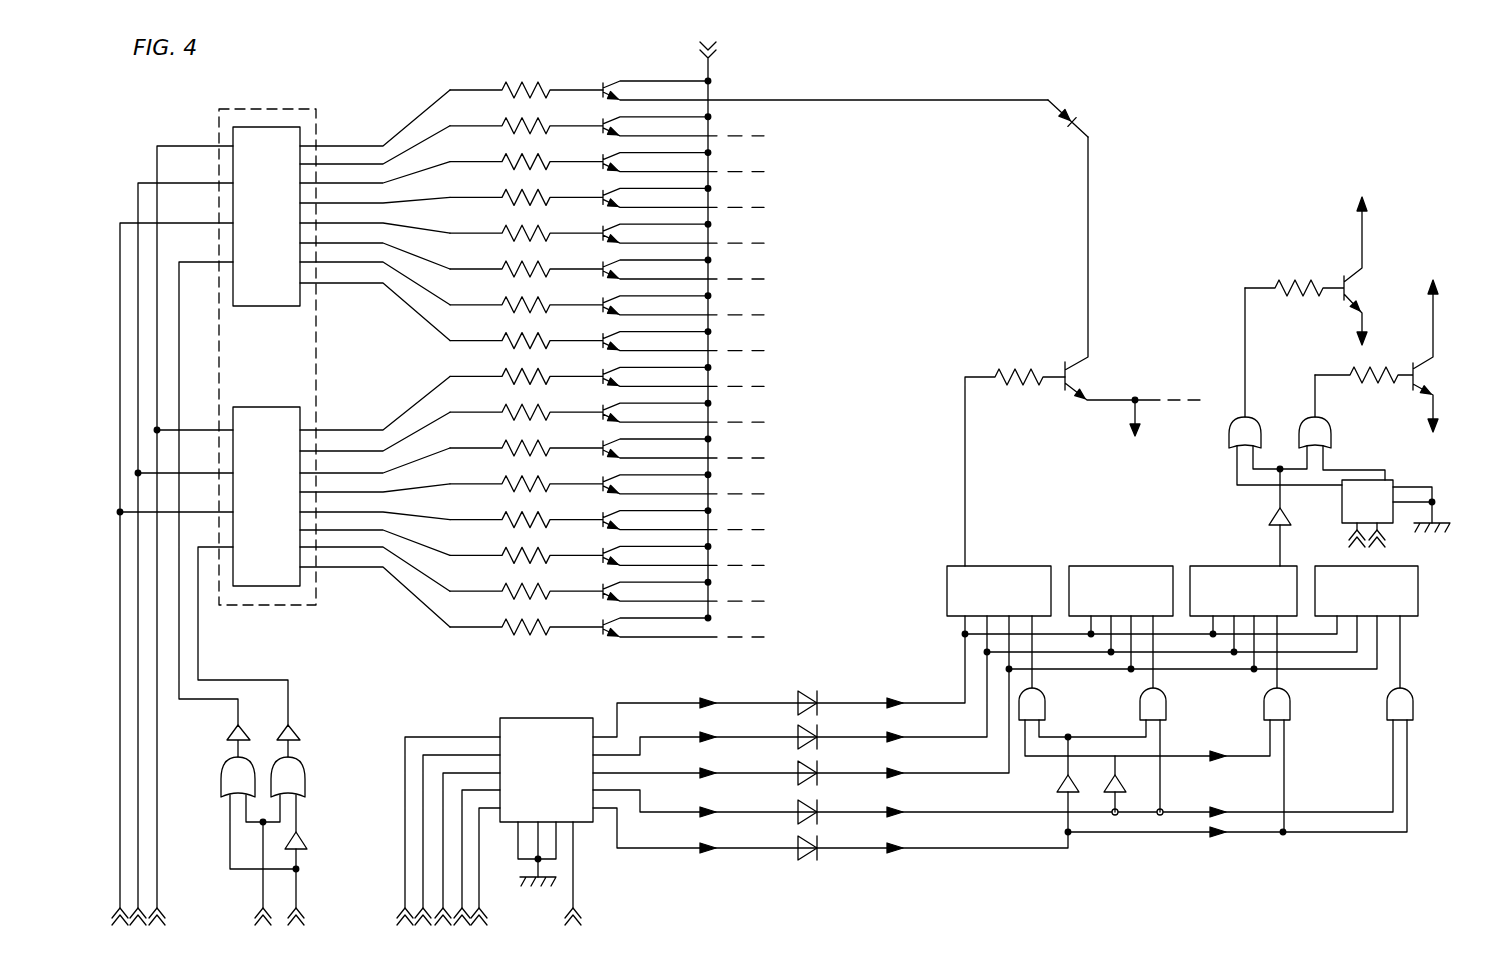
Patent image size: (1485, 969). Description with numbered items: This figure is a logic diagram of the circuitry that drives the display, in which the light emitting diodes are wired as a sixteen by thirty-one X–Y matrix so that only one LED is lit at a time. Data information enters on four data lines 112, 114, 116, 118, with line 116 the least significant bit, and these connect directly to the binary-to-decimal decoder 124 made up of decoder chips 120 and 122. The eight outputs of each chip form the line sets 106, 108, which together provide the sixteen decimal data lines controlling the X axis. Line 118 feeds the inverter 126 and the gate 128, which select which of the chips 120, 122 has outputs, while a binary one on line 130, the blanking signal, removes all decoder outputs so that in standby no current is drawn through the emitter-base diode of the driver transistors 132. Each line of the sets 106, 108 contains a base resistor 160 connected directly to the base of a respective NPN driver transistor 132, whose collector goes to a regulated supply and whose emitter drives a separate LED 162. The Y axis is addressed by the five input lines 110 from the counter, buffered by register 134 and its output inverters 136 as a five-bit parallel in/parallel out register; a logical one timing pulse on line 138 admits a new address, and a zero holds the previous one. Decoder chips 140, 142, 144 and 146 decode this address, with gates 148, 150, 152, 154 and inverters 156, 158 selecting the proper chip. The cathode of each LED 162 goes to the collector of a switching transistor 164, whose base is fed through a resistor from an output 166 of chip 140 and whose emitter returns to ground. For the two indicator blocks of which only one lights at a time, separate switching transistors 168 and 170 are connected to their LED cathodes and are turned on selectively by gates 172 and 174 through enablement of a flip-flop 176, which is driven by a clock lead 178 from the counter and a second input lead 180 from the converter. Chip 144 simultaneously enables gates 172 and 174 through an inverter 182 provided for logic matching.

The line set 106 is at (340, 200).
The line set 108 is at (344, 515).
The input lines 110 is at (463, 768).
The data line 112 is at (120, 887).
The data line 114 is at (138, 853).
The data line 116 is at (157, 853).
The data line 118 is at (300, 887).
The decoder chip 120 is at (260, 140).
The decoder chip 122 is at (248, 420).
The binary-to-decimal decoder 124 is at (218, 136).
The inverter 126 is at (302, 836).
The gate 128 is at (230, 775).
The line 130 is at (263, 882).
The driver transistor 132 is at (601, 84).
The register 134 is at (545, 728).
The output inverter 136 is at (813, 692).
The line 138 is at (573, 868).
The decoder chip 140 is at (983, 566).
The decoder chip 142 is at (1088, 566).
The decoder chip 144 is at (1203, 566).
The decoder chip 146 is at (1418, 612).
The gate 148 is at (1036, 705).
The gate 150 is at (1157, 705).
The gate 152 is at (1285, 705).
The gate 154 is at (1403, 692).
The inverter 156 is at (1060, 781).
The inverter 158 is at (1125, 780).
The base resistor 160 is at (527, 80).
The LED 162 is at (1078, 126).
The switching transistor 164 is at (1085, 358).
The output 166 is at (967, 458).
The switching transistor 168 is at (1362, 235).
The switching transistor 170 is at (1433, 320).
The gate 172 is at (1248, 432).
The gate 174 is at (1316, 437).
The flip-flop 176 is at (1382, 490).
The clock lead 178 is at (1352, 532).
The second input lead 180 is at (1385, 535).
The inverter 182 is at (1270, 510).